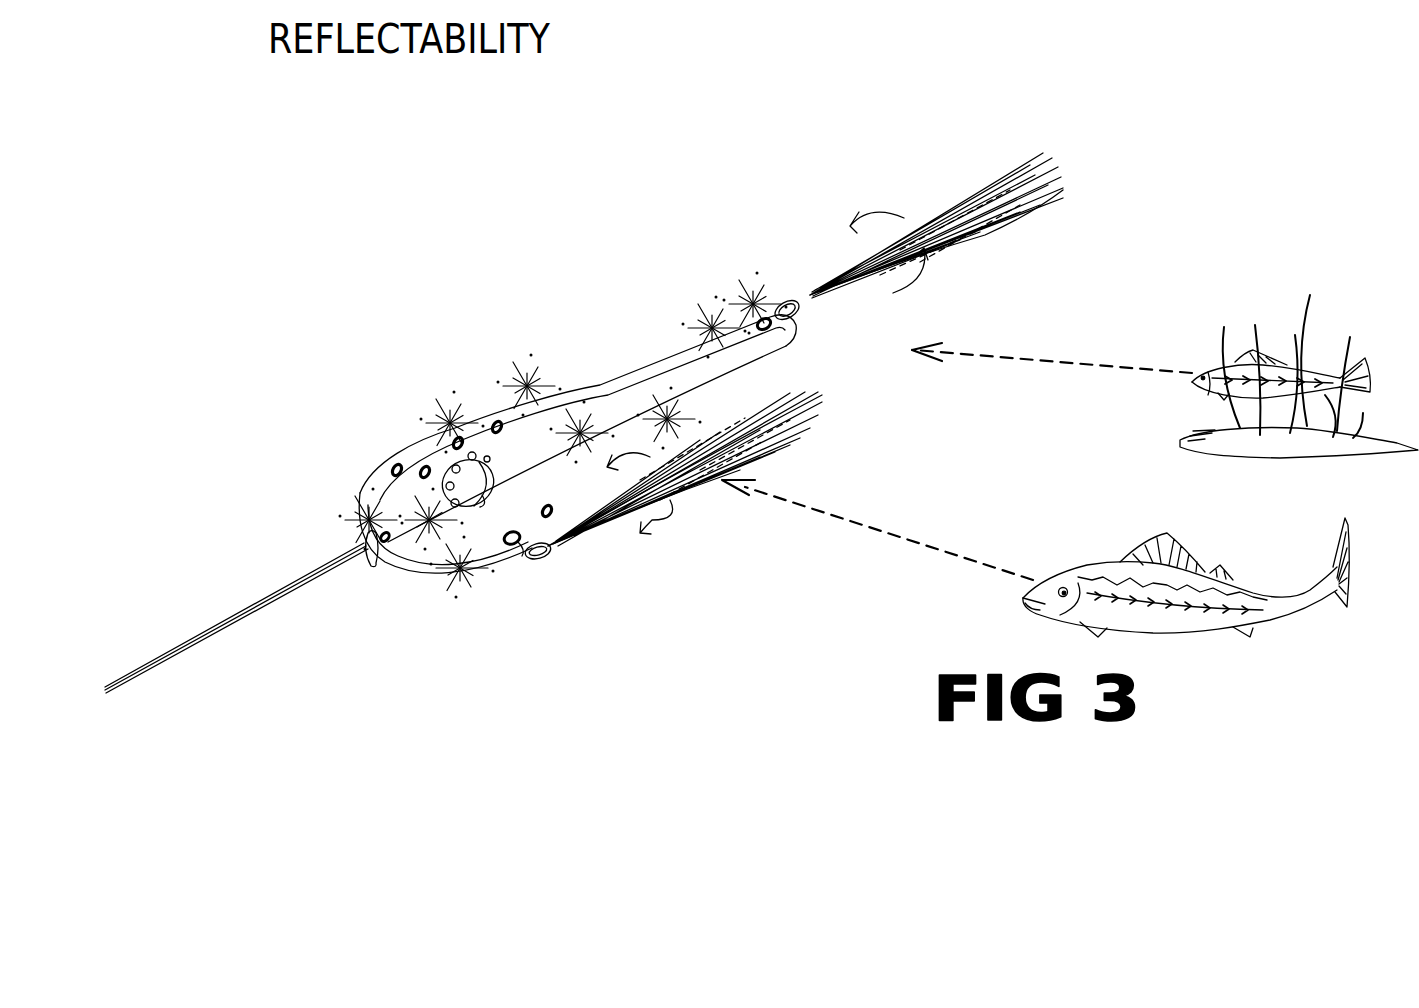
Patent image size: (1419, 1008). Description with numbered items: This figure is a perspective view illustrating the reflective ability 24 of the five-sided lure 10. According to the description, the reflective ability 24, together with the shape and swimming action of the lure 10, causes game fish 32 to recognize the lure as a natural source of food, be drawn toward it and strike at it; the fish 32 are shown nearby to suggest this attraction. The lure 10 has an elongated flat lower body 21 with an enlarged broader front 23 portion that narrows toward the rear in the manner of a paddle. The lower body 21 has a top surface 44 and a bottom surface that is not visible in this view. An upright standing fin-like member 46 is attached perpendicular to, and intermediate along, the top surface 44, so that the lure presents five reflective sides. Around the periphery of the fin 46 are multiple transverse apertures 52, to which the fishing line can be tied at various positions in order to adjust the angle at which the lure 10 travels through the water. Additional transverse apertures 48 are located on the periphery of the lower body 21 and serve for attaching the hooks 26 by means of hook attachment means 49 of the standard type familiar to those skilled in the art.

The five-sided lure 10 is at (625, 370).
The elongated flat lower body 21 is at (364, 560).
The enlarged broader front portion 23 is at (415, 563).
The reflective ability 24 is at (452, 410).
The hooks 26 is at (648, 515).
The fish 32 is at (1107, 567).
The top surface 44 is at (460, 572).
The upright standing fin-like member 46 is at (403, 492).
The transverse apertures 48 is at (482, 563).
The hook attachment means 49 is at (525, 560).
The transverse apertures 52 is at (422, 466).